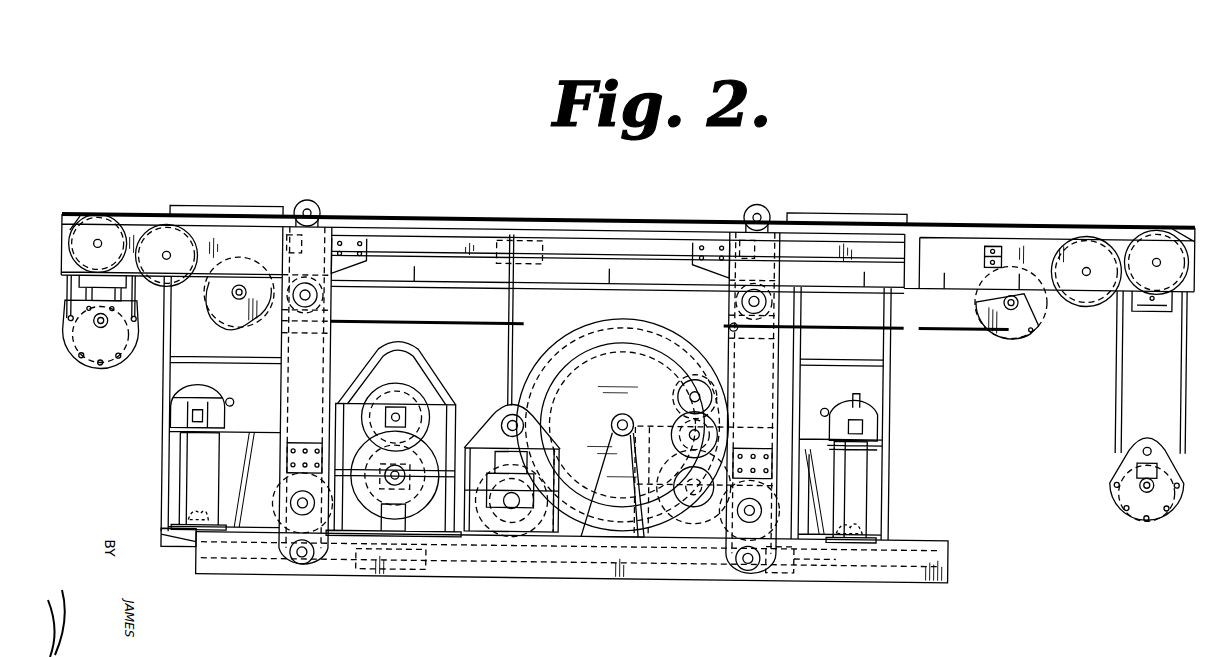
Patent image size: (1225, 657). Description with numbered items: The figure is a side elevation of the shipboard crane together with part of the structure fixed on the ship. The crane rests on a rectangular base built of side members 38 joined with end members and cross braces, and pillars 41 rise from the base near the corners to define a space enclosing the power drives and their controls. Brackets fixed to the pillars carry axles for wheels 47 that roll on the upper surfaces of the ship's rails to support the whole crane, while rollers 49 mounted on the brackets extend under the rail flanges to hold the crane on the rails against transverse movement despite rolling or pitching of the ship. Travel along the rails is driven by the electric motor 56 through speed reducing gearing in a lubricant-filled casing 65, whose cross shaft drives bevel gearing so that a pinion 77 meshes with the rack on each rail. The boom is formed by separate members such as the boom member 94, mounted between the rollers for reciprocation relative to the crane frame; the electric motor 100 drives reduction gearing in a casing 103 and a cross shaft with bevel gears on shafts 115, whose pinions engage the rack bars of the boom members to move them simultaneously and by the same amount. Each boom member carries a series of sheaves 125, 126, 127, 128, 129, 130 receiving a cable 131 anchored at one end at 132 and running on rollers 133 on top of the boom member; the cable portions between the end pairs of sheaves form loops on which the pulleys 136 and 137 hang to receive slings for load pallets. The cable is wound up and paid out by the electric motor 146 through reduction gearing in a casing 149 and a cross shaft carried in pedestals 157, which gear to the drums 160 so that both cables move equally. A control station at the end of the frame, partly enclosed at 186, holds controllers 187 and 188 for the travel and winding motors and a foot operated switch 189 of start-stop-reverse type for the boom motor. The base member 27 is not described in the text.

The base beam 27 is at (612, 572).
The side member 38 is at (186, 545).
The pillar 41 is at (333, 348).
The wheel 47 is at (790, 568).
The roller 49 is at (752, 563).
The electric motor 56 is at (430, 362).
The casing 65 is at (352, 400).
The pinion 77 is at (436, 566).
The boom member 94 is at (402, 246).
The electric motor 100 is at (505, 412).
The casing 103 is at (500, 442).
The shaft 115 is at (508, 366).
The sheave 125 is at (100, 212).
The sheave 126 is at (165, 285).
The sheave 127 is at (244, 322).
The sheave 128 is at (978, 298).
The sheave 129 is at (1085, 292).
The sheave 130 is at (1162, 221).
The cable 131 is at (574, 213).
The cable anchor 132 is at (731, 319).
The roller 133 is at (314, 200).
The pulley 136 is at (107, 366).
The pulley 137 is at (1150, 508).
The electric motor 146 is at (680, 382).
The casing 149 is at (633, 409).
The pedestal 157 is at (607, 448).
The drum 160 is at (640, 314).
The control station enclosure 186 is at (851, 349).
The controller 187 is at (190, 465).
The controller 188 is at (858, 470).
The foot operated switch 189 is at (195, 512).